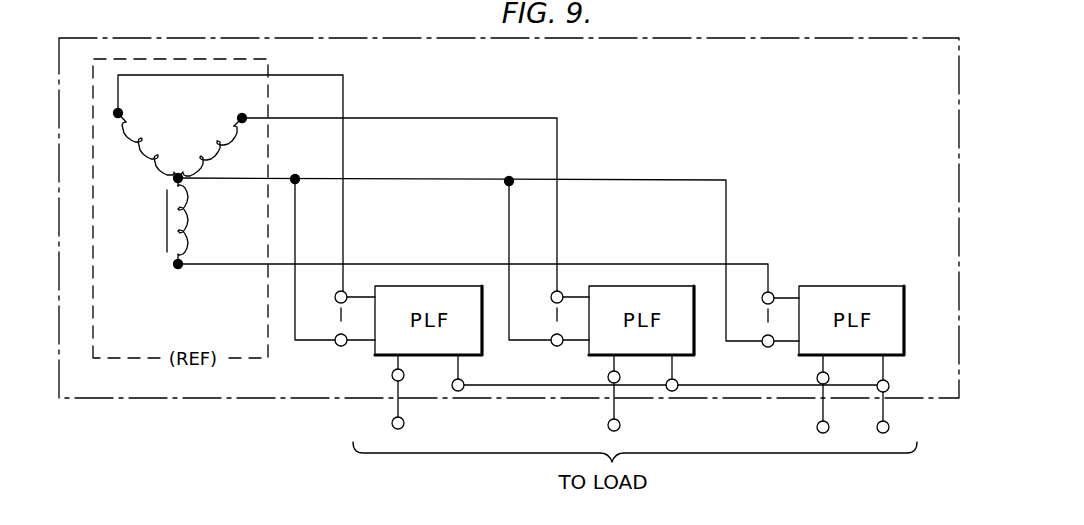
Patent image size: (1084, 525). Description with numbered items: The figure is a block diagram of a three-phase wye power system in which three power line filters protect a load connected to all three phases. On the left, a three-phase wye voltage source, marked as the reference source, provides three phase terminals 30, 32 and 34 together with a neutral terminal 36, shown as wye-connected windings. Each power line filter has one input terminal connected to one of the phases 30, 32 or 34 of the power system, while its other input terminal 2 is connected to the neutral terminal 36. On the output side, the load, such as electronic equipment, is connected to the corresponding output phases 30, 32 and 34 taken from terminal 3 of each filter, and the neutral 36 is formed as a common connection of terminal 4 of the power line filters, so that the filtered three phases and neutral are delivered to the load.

The phase terminal 30 is at (122, 111).
The phase terminal 32 is at (242, 114).
The phase terminal 34 is at (176, 268).
The neutral terminal 36 is at (182, 181).
The terminal 2 is at (567, 331).
The terminal 3 is at (601, 369).
The terminal 4 is at (662, 373).